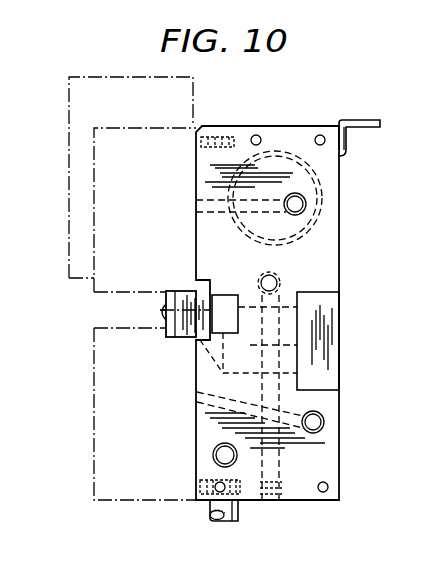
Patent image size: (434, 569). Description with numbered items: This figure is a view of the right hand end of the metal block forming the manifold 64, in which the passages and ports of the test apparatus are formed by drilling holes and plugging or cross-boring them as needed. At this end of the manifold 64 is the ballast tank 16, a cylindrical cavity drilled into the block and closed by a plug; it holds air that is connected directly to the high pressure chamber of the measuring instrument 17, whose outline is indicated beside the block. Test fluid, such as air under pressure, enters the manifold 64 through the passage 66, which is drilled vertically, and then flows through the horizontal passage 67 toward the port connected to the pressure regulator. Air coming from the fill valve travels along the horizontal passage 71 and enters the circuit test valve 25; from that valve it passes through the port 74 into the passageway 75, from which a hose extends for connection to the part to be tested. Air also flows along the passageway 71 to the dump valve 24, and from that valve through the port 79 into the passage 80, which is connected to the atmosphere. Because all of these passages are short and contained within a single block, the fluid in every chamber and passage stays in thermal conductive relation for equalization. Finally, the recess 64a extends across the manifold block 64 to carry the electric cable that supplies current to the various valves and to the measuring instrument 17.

The ballast tank 16 is at (290, 160).
The measuring instrument 17 is at (76, 139).
The dump valve 24 is at (115, 290).
The circuit test valve 25 is at (104, 375).
The manifold 64 is at (262, 126).
The recess 64a is at (223, 302).
The passage 66 is at (297, 345).
The horizontal passage 67 is at (278, 284).
The horizontal passage 71 is at (320, 420).
The port 74 is at (210, 392).
The passageway 75 is at (216, 458).
The port 79 is at (212, 213).
The passage 80 is at (303, 204).